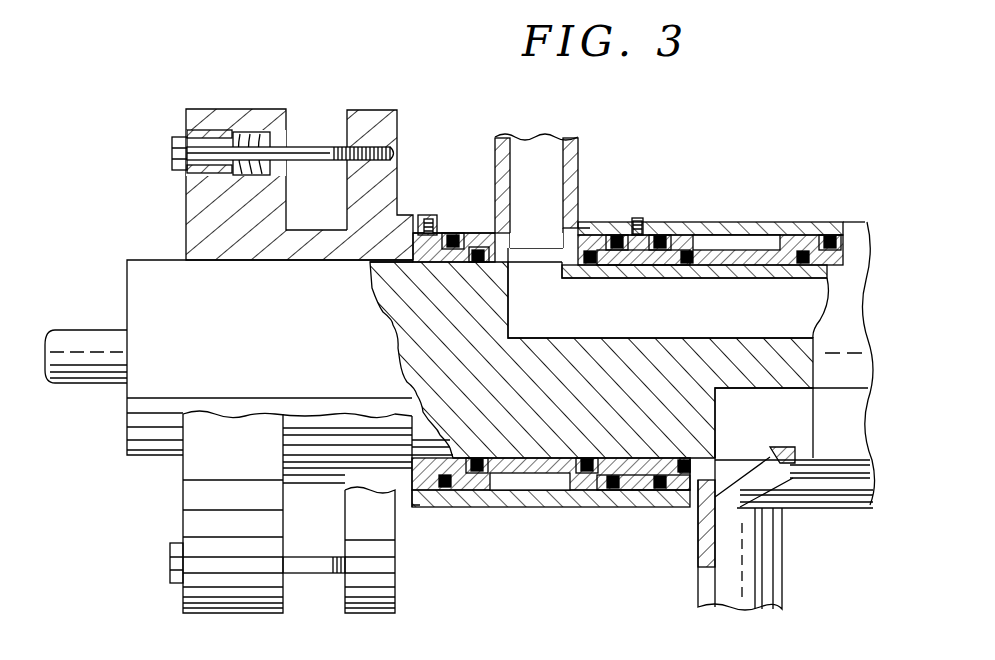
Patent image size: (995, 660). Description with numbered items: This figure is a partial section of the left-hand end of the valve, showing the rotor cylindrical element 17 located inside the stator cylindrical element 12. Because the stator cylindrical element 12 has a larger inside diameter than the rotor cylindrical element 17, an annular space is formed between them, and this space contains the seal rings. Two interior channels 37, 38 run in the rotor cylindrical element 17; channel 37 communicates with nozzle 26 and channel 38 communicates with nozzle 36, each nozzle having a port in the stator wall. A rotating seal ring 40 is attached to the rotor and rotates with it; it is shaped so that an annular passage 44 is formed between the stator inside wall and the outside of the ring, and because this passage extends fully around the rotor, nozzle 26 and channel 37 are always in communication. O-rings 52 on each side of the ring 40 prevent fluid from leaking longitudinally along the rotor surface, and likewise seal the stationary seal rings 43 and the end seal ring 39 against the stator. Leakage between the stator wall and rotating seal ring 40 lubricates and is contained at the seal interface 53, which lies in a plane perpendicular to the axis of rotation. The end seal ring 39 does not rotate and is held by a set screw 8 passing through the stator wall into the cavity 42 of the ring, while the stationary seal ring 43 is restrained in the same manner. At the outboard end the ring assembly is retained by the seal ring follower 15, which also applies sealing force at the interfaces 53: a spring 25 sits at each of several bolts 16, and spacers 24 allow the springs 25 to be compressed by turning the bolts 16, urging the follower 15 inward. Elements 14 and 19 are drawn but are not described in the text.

The set screw 8 is at (432, 232).
The stator cylindrical element 12 is at (866, 222).
The flange block 14 is at (372, 110).
The seal ring follower 15 is at (233, 109).
The bolt 16 is at (173, 150).
The rotor cylindrical element 17 is at (150, 258).
The shaft 19 is at (95, 330).
The spacer 24 is at (203, 176).
The spring 25 is at (255, 176).
The nozzle 26 is at (580, 152).
The nozzle 36 is at (788, 565).
The interior channel 37 is at (560, 326).
The interior channel 38 is at (787, 426).
The end seal ring 39 is at (375, 262).
The rotating seal ring 40 is at (509, 265).
The cavity 42 is at (421, 236).
The stationary seal ring 43 is at (632, 275).
The annular passage 44 is at (525, 240).
The O-ring 52 is at (452, 238).
The seal interface 53 is at (808, 222).